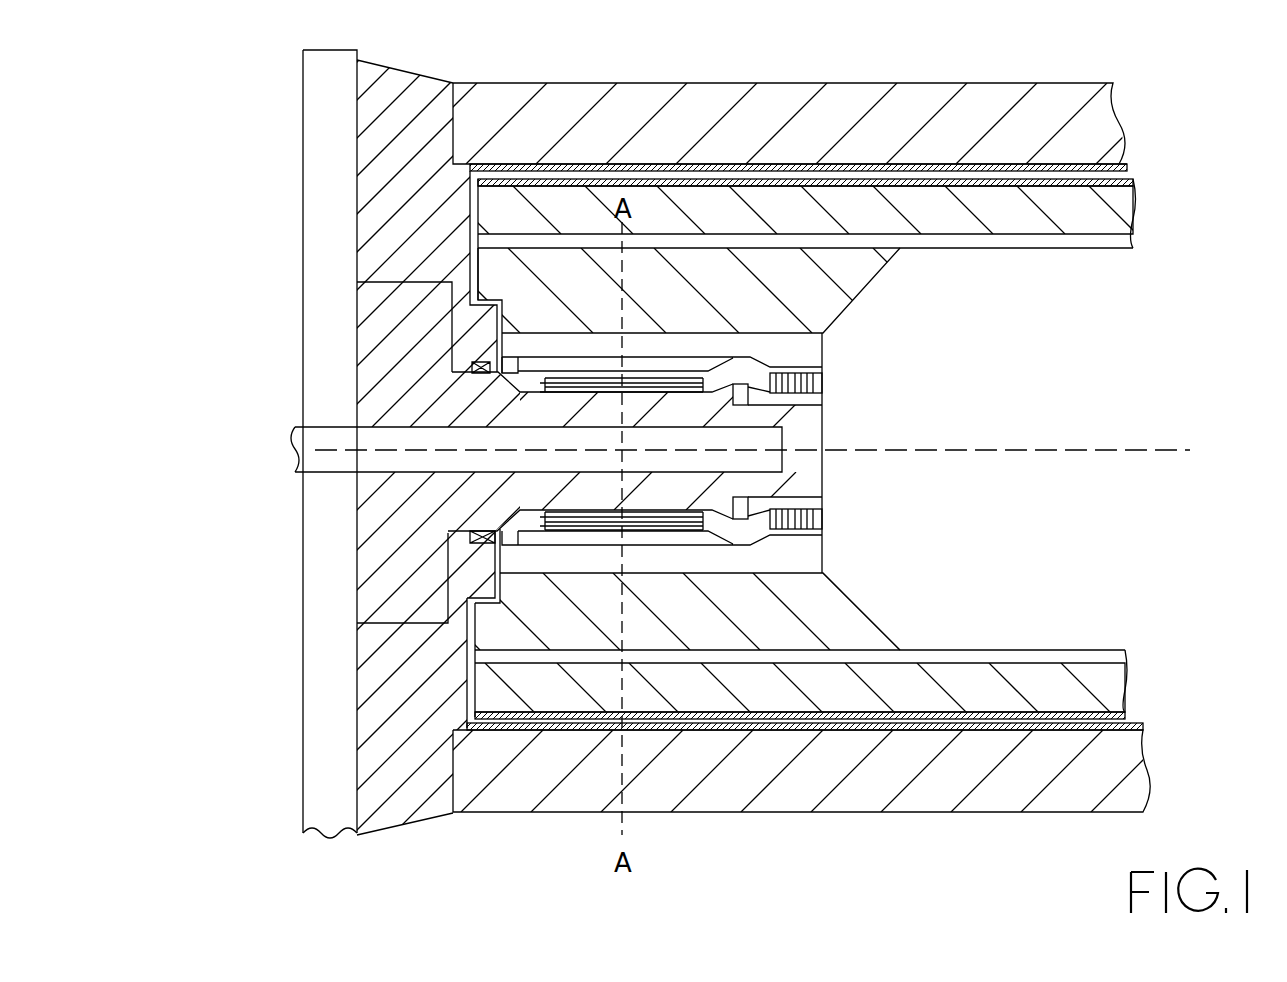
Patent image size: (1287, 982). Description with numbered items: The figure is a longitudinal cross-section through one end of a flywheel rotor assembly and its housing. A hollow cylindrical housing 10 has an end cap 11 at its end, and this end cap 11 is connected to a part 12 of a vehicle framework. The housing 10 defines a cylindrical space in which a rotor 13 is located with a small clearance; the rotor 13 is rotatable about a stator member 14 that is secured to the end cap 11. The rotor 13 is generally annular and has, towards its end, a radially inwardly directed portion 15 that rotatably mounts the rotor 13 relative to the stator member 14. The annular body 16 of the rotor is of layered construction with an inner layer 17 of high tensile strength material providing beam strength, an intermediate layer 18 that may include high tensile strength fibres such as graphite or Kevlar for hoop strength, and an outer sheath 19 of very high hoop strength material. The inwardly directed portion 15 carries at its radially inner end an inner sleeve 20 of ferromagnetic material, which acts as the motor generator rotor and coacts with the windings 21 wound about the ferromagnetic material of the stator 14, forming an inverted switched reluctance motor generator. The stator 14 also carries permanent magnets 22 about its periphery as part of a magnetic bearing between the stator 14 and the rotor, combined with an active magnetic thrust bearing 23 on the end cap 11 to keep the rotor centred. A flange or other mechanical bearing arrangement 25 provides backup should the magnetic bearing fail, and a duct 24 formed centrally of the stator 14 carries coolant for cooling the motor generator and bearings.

The housing 10 is at (1140, 777).
The end cap 11 is at (397, 744).
The part of a vehicle framework 12 is at (330, 632).
The rotor 13 is at (1190, 218).
The stator member 14 is at (787, 437).
The radially inwardly directed portion 15 is at (860, 265).
The annular body 16 is at (1112, 677).
The inner layer 17 is at (1140, 238).
The intermediate layer 18 is at (1027, 213).
The outer sheath 19 is at (1137, 713).
The inner sleeve 20 is at (785, 553).
The windings 21 is at (580, 376).
The permanent magnet 22 is at (735, 383).
The active magnetic thrust bearing 23 is at (472, 355).
The duct 24 is at (445, 436).
The mechanical bearing arrangement 25 is at (470, 590).